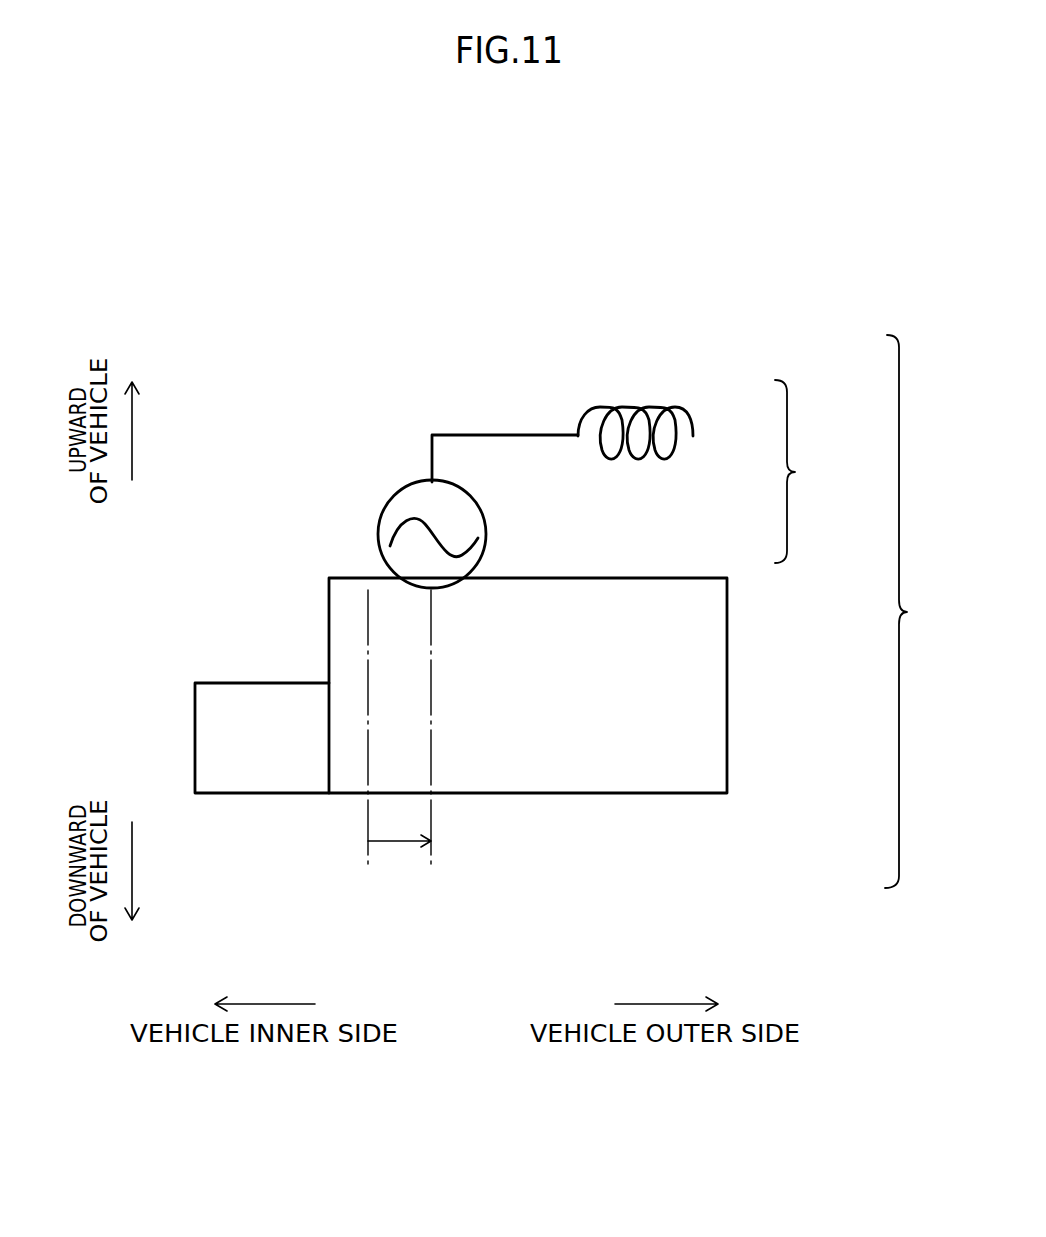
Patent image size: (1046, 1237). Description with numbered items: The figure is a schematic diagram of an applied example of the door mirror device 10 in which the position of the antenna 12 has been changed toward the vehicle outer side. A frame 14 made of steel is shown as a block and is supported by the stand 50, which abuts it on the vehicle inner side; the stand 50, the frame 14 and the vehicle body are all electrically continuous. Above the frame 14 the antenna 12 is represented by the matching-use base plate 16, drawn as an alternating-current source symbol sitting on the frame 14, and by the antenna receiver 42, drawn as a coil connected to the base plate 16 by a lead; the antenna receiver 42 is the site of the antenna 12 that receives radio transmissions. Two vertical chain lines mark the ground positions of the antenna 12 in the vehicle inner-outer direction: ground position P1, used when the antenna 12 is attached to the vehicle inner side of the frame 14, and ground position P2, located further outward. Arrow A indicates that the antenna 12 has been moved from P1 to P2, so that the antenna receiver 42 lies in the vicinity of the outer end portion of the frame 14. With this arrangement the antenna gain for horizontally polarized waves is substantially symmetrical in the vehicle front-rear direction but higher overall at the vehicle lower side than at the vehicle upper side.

The door mirror device 10 is at (919, 611).
The antenna 12 is at (808, 471).
The frame 14 is at (510, 773).
The matching-use base plate 16 is at (477, 495).
The antenna receiver 42 is at (656, 390).
The stand 50 is at (266, 773).
The ground position P1 is at (370, 747).
The ground position P2 is at (435, 747).
The arrow A is at (400, 838).